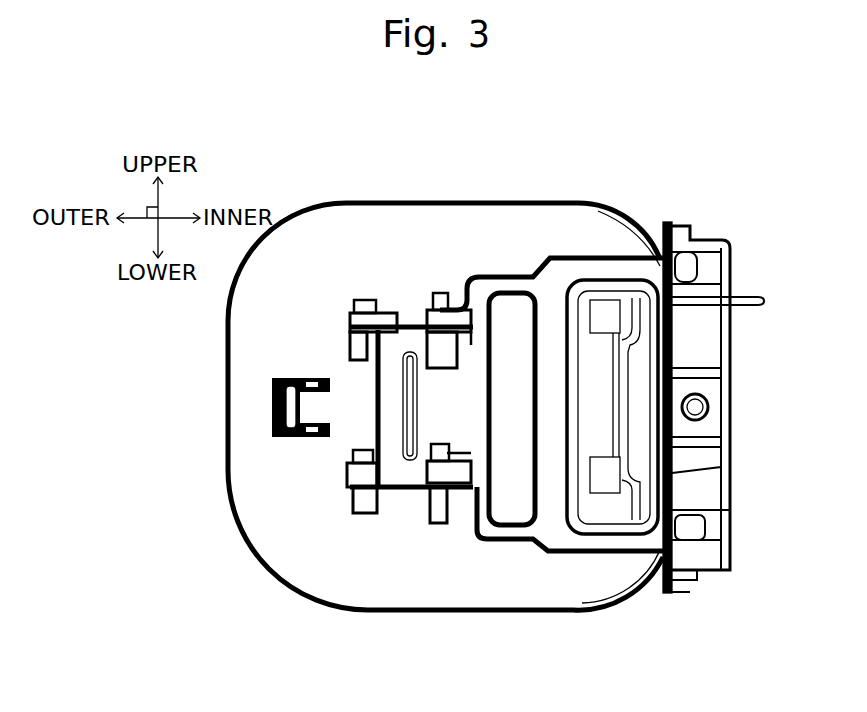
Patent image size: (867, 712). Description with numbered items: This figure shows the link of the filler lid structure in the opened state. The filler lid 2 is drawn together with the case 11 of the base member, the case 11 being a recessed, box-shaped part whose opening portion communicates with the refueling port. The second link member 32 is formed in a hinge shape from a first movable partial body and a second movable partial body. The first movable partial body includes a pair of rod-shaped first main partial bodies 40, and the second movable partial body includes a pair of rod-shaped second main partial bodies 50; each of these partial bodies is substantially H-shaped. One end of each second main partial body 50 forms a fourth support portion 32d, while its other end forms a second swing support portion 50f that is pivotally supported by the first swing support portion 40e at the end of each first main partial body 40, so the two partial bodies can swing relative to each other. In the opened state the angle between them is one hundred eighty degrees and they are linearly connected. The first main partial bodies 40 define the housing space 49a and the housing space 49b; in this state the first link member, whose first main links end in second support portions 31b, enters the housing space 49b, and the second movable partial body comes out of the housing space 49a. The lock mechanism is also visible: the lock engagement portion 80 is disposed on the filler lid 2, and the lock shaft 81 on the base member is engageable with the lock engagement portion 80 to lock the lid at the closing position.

The filler lid 2 is at (337, 221).
The case 11 is at (710, 250).
The second support portion 31b is at (636, 297).
The second link member 32 is at (472, 150).
The fourth support portion 32d is at (348, 318).
The first main partial body 40 is at (500, 258).
The first swing support portion 40e is at (457, 303).
The housing space 49a is at (523, 295).
The housing space 49b is at (608, 536).
The second main partial body 50 is at (410, 340).
The second swing support portion 50f is at (473, 343).
The lock engagement portion 80 is at (270, 402).
The lock shaft 81 is at (707, 398).